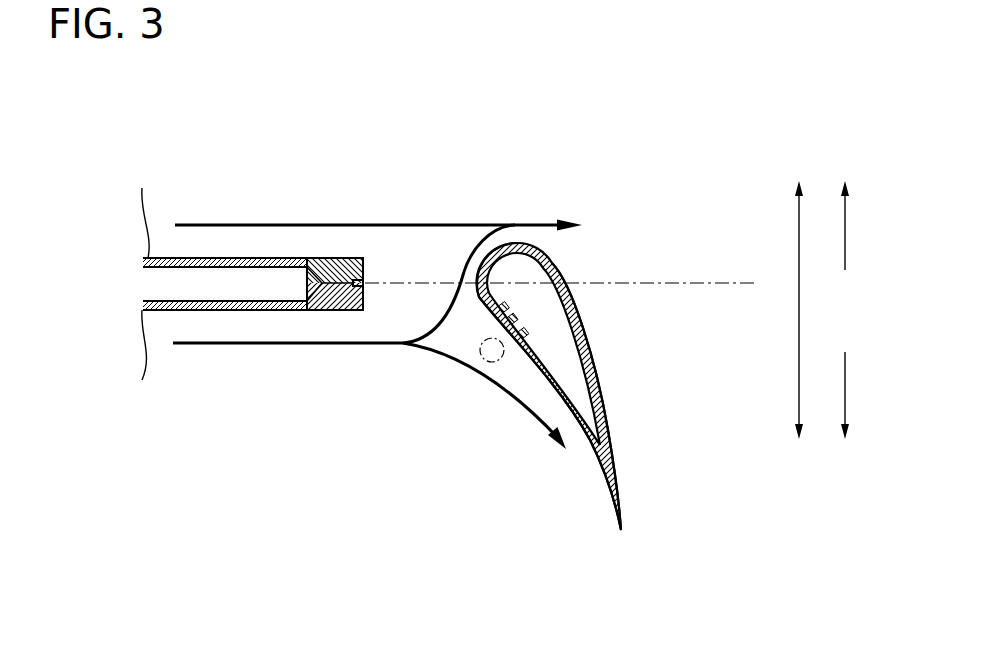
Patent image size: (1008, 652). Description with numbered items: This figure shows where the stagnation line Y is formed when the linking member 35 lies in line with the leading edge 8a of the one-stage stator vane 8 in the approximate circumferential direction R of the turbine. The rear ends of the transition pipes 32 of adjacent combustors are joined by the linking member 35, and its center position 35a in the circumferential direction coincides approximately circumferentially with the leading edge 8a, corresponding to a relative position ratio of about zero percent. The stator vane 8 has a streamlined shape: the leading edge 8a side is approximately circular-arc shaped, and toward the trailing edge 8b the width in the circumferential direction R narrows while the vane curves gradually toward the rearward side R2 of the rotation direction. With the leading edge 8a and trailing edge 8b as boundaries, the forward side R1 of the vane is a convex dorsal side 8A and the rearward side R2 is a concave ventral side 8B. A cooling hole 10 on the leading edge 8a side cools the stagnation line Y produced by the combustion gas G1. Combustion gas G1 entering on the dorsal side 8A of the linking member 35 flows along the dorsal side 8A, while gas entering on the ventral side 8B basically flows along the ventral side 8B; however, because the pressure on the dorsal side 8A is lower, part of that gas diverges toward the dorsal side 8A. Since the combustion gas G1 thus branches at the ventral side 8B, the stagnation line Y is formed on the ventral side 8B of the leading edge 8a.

The one-stage stator vane 8 is at (613, 443).
The dorsal side 8A is at (618, 392).
The ventral side 8B is at (592, 490).
The leading edge 8a is at (477, 289).
The trailing edge 8b is at (621, 531).
The cooling hole 10 is at (506, 308).
The transition pipe 32 is at (160, 200).
The linking member 35 is at (332, 258).
The center position of the linking member 35a is at (368, 282).
The combustion gas G1 is at (276, 225).
The stagnation line Y is at (492, 362).
The circumferential direction R is at (809, 310).
The forward side in the rotation direction R1 is at (863, 225).
The rearward side in the rotation direction R2 is at (863, 395).